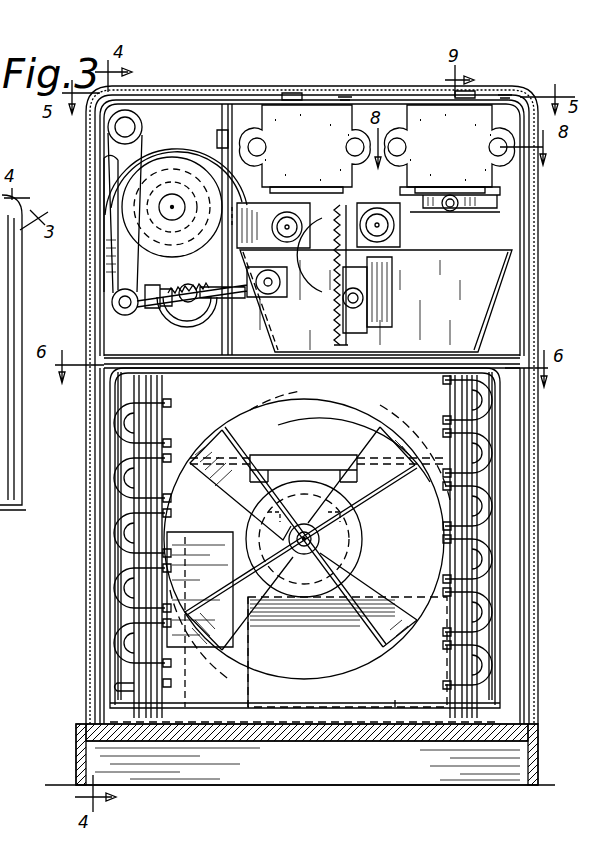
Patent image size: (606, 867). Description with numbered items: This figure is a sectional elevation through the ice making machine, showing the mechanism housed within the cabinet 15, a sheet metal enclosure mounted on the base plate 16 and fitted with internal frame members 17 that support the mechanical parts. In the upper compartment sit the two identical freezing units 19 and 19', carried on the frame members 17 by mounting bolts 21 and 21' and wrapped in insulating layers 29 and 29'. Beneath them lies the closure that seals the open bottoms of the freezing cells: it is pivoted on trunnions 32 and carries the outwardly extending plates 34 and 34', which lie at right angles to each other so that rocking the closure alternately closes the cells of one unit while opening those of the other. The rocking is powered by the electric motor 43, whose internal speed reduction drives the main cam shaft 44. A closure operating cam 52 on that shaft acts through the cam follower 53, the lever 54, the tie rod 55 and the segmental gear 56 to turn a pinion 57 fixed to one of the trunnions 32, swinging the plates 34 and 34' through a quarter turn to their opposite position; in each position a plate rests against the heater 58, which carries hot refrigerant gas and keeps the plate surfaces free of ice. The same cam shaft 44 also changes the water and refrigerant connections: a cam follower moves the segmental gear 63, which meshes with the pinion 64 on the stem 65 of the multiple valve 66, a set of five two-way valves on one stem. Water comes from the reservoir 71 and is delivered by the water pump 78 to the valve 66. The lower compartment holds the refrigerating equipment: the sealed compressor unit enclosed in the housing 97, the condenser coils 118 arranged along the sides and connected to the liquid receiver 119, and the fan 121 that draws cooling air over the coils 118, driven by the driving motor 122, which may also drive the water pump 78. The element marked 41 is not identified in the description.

The cabinet 15 is at (88, 572).
The base plate 16 is at (78, 760).
The internal frame members 17 is at (258, 93).
The freezing unit 19 is at (449, 149).
The freezing unit 19' is at (304, 149).
The mounting bolt 21 is at (487, 68).
The mounting bolt 21' is at (313, 70).
The insulating layer 29 is at (522, 73).
The insulating layer 29' is at (364, 73).
The trunnions 32 is at (400, 250).
The plate 34 is at (486, 199).
The plate 34' is at (316, 278).
The shelf plate 41 is at (497, 308).
The electric motor 43 is at (175, 127).
The main cam shaft 44 is at (222, 120).
The closure operating cam 52 is at (173, 205).
The cam follower 53 is at (118, 206).
The lever 54 is at (115, 268).
The tie rod 55 is at (187, 324).
The segmental gear 56 is at (279, 253).
The pinion 57 is at (398, 275).
The heater 58 is at (385, 297).
The segmental gear 63 is at (112, 163).
The pinion 64 is at (190, 328).
The stem 65 is at (158, 318).
The multiple valve 66 is at (175, 336).
The water reservoir 71 is at (226, 540).
The water pump 78 is at (330, 548).
The housing 97 is at (429, 405).
The condenser coils 118 is at (120, 640).
The liquid receiver 119 is at (247, 672).
The fan 121 is at (398, 594).
The driving motor 122 is at (362, 540).